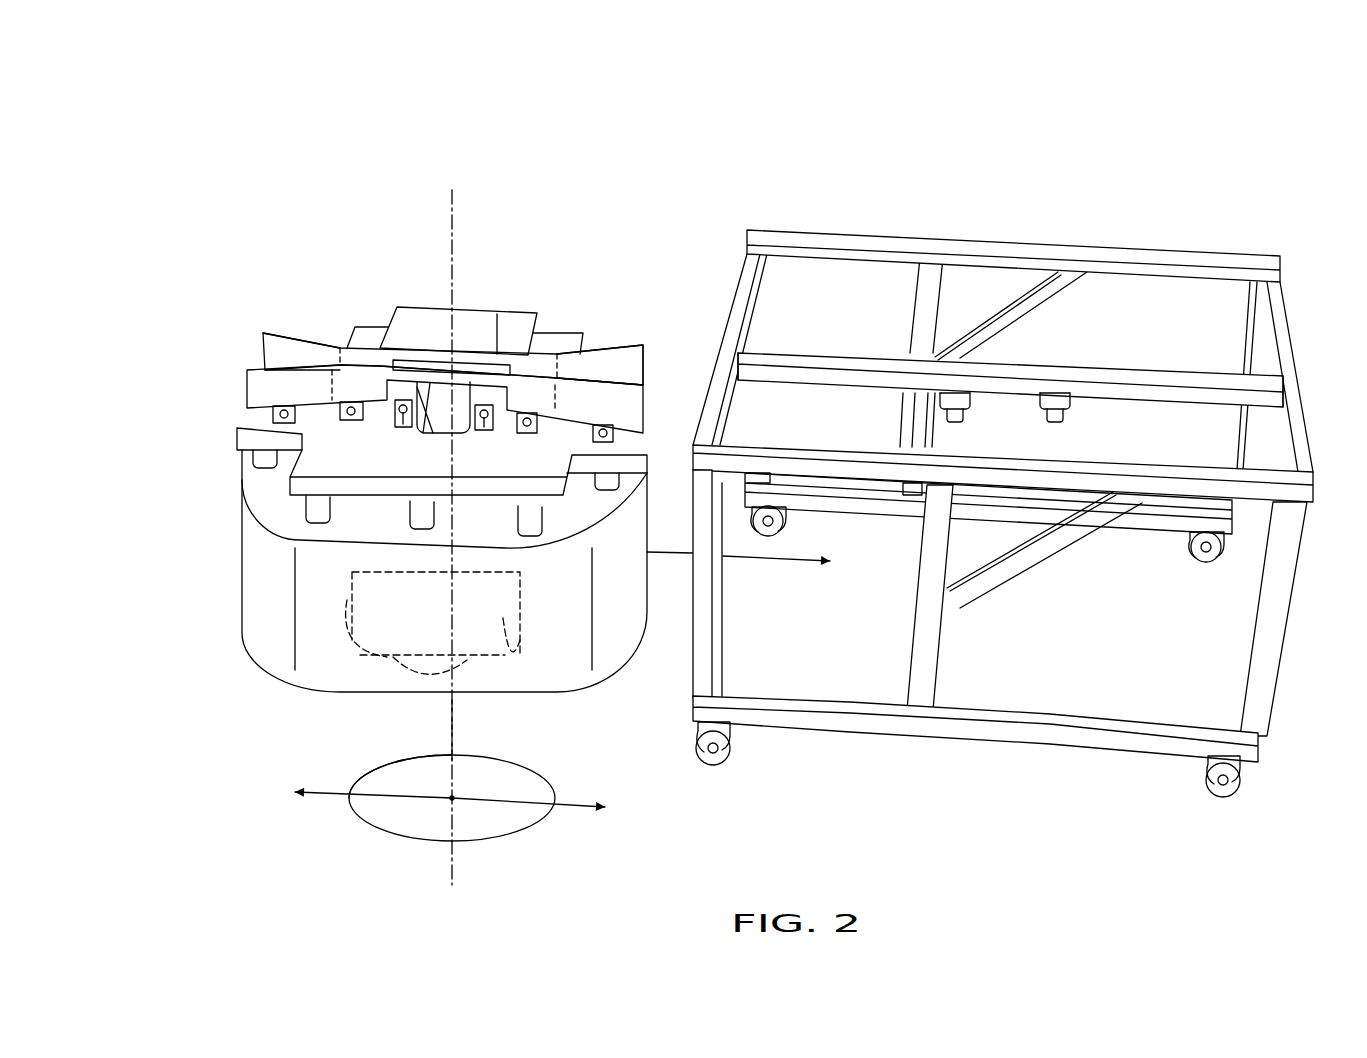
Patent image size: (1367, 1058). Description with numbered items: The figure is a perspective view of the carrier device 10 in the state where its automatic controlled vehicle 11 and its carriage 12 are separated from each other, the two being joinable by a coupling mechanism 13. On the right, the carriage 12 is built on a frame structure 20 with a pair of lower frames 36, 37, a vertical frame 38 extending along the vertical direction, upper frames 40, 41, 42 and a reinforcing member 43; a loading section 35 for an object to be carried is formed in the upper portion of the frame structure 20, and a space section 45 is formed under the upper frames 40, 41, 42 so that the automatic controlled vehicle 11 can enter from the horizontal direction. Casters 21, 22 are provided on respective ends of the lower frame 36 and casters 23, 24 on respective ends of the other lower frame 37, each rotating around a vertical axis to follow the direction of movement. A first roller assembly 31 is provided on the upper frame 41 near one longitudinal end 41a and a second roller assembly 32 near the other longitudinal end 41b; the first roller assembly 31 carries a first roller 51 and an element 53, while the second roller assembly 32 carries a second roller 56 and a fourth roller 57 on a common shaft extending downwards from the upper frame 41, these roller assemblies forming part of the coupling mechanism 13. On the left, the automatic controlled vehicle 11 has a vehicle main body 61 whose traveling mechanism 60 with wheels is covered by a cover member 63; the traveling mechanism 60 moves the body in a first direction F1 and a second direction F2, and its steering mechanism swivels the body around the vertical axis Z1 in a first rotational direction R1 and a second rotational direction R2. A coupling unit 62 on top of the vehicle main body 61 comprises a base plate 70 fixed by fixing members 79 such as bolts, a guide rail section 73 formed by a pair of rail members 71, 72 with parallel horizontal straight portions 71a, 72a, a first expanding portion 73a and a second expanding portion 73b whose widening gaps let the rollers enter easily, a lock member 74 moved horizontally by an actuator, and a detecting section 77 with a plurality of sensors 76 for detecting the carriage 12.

The carrier device 10 is at (657, 146).
The automatic controlled vehicle 11 is at (577, 289).
The carriage 12 is at (885, 228).
The coupling mechanism 13 is at (228, 420).
The frame structure 20 is at (1006, 752).
The caster 21 is at (1226, 800).
The caster 22 is at (713, 768).
The caster 23 is at (1200, 558).
The caster 24 is at (790, 520).
The first roller assembly 31 is at (1082, 427).
The second roller assembly 32 is at (945, 432).
The loading section 35 is at (786, 300).
The lower frame 36 is at (868, 728).
The lower frame 37 is at (966, 506).
The vertical frame 38 is at (695, 640).
The upper frame 40 is at (818, 452).
The upper frame 41 is at (848, 360).
The longitudinal end 41a is at (1283, 390).
The longitudinal end 41b is at (735, 340).
The upper frame 42 is at (792, 232).
The reinforcing member 43 is at (1000, 318).
The space section 45 is at (793, 589).
The first roller 51 is at (1070, 402).
The clamp pin 53 is at (1053, 420).
The second roller 56 is at (968, 400).
The fourth roller 57 is at (957, 418).
The traveling mechanism 60 is at (385, 645).
The vehicle main body 61 is at (242, 582).
The coupling unit 62 is at (577, 500).
The cover member 63 is at (277, 640).
The base plate 70 is at (448, 500).
The rail member 71 is at (517, 420).
The straight portion 71a is at (448, 430).
The rail member 72 is at (548, 345).
The straight portion 72a is at (497, 354).
The guide rail section 73 is at (411, 334).
The first expanding portion 73a is at (626, 360).
The second expanding portion 73b is at (288, 357).
The lock member 74 is at (437, 320).
The sensor 76 is at (405, 428).
The detecting section 77 is at (577, 403).
The fixing member 79 is at (318, 512).
The first rotational direction R1 is at (470, 757).
The second rotational direction R2 is at (440, 757).
The vertical axis Z1 is at (455, 718).
The first direction F1 is at (572, 810).
The second direction F2 is at (333, 796).